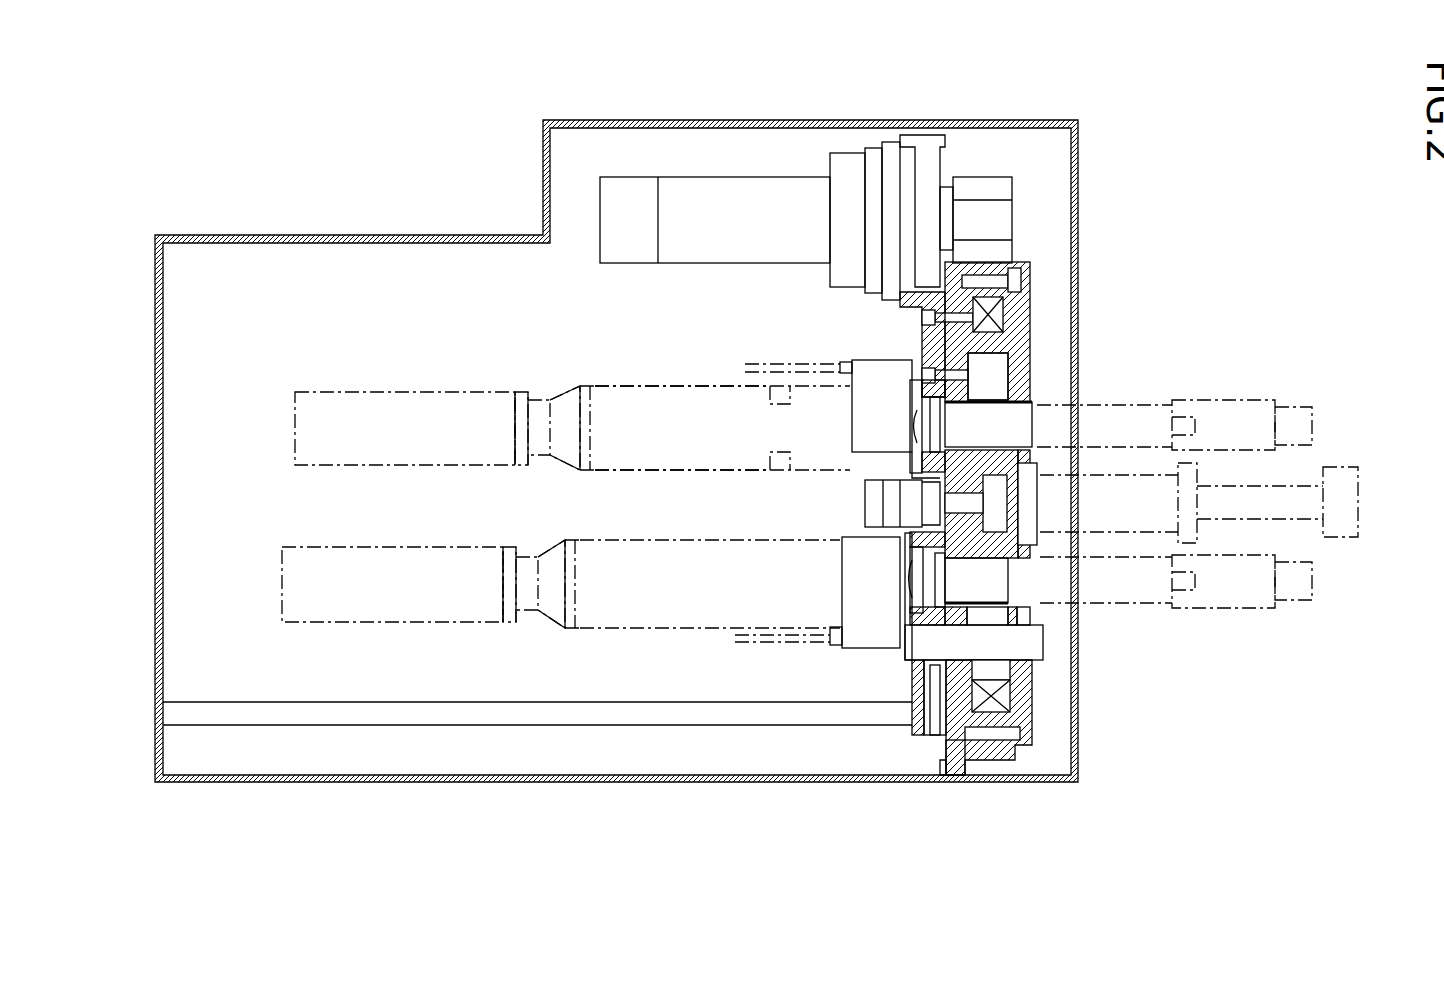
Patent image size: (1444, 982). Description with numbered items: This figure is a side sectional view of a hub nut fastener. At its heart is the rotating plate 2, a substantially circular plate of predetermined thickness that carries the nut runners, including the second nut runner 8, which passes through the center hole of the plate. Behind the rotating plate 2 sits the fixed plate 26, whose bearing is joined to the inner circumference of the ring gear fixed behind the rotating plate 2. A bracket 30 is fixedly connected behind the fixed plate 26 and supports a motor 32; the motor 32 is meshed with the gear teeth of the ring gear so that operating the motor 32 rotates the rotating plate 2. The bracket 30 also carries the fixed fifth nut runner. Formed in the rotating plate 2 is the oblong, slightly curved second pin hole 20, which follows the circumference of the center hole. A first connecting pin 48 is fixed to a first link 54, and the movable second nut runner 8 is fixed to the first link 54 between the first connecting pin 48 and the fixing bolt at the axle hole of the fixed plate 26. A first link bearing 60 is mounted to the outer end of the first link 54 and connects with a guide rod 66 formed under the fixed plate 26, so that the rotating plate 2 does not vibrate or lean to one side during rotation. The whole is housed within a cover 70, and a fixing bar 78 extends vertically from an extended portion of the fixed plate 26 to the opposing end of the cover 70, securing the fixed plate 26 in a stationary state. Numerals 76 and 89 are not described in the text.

The rotating plate 2 is at (1025, 683).
The second nut runner 8 is at (1155, 590).
The second pin hole 20 is at (1003, 357).
The fixed plate 26 is at (940, 760).
The bracket 30 is at (922, 343).
The motor 32 is at (725, 252).
The first connecting pin 48 is at (1032, 640).
The first link 54 is at (917, 668).
The first link bearing 60 is at (943, 680).
The guide rod 66 is at (927, 727).
The cover 70 is at (667, 783).
The ring 76 is at (950, 767).
The fixing bar 78 is at (260, 710).
The nut 89 is at (868, 497).